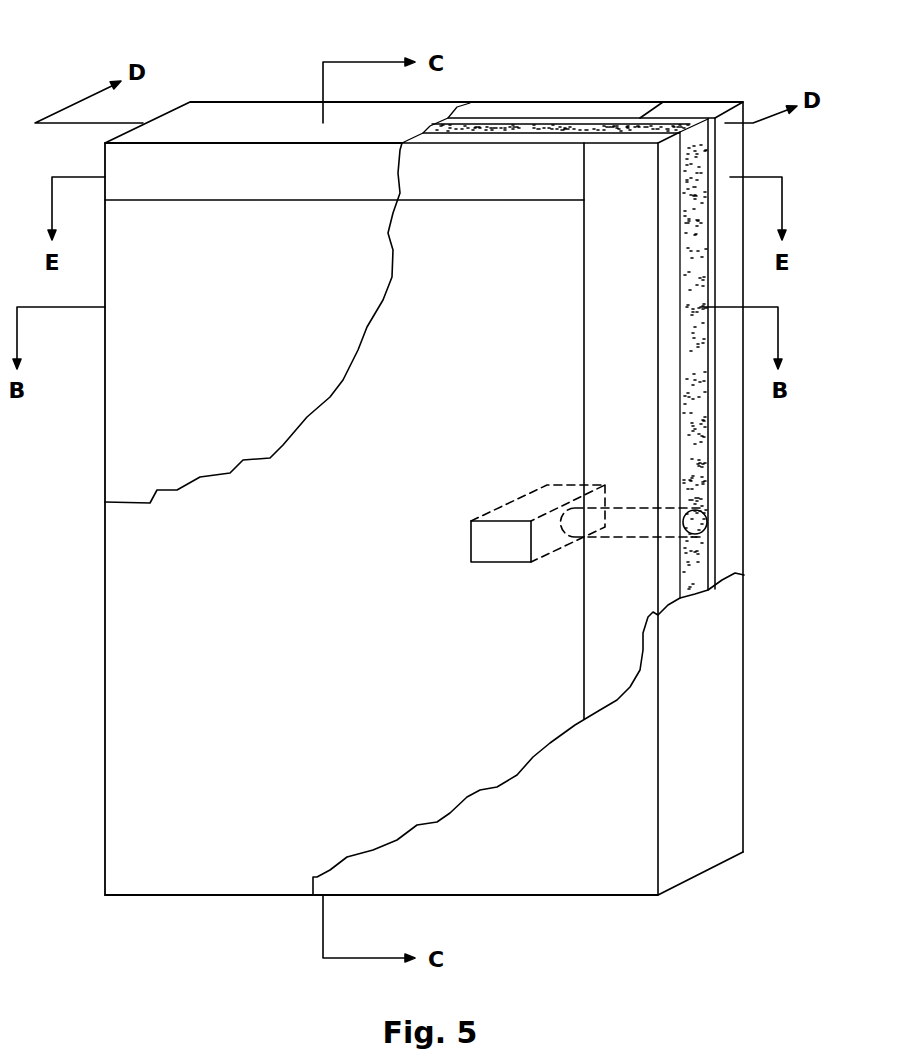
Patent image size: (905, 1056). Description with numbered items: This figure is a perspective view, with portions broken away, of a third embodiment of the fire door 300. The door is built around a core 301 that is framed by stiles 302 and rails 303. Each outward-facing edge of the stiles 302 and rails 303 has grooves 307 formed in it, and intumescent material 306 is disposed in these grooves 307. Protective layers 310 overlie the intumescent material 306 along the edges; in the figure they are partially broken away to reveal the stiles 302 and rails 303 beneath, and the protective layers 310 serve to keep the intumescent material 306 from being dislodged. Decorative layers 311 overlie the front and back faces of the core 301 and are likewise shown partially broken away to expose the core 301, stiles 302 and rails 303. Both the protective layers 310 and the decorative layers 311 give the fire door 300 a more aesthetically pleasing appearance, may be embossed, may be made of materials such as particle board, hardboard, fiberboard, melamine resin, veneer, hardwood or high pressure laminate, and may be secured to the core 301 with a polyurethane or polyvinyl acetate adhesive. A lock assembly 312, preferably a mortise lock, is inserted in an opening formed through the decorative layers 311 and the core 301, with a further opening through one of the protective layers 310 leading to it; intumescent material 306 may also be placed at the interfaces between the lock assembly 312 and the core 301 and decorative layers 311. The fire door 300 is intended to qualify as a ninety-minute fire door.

The fire door 300 is at (233, 924).
The core 301 is at (545, 413).
The stiles 302 is at (632, 405).
The rails 303 is at (503, 170).
The intumescent material 306 is at (557, 128).
The grooves 307 is at (685, 122).
The protective layers 310 is at (720, 707).
The decorative layers 311 is at (160, 422).
The lock assembly 312 is at (520, 503).